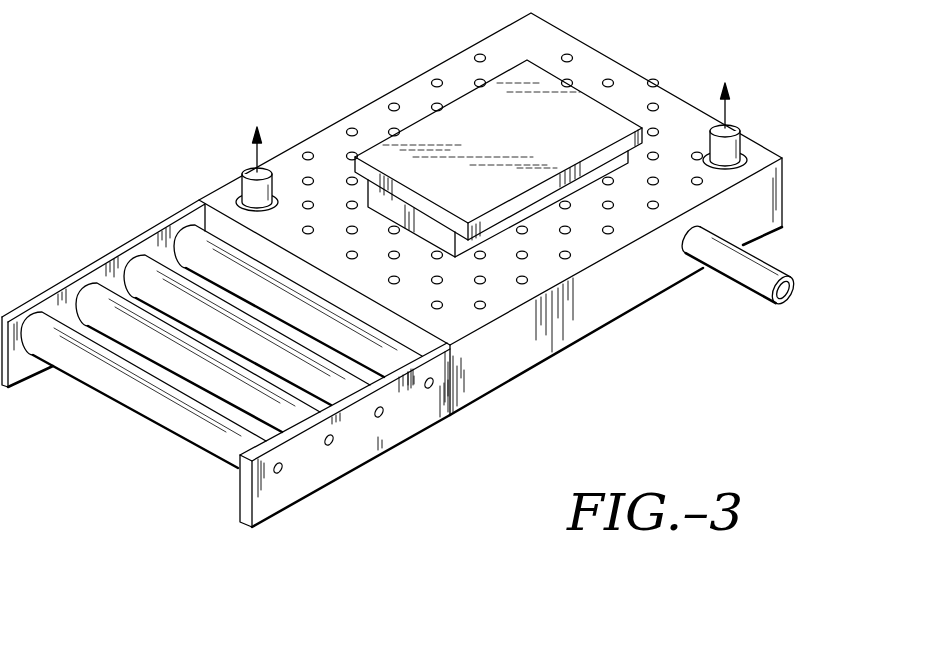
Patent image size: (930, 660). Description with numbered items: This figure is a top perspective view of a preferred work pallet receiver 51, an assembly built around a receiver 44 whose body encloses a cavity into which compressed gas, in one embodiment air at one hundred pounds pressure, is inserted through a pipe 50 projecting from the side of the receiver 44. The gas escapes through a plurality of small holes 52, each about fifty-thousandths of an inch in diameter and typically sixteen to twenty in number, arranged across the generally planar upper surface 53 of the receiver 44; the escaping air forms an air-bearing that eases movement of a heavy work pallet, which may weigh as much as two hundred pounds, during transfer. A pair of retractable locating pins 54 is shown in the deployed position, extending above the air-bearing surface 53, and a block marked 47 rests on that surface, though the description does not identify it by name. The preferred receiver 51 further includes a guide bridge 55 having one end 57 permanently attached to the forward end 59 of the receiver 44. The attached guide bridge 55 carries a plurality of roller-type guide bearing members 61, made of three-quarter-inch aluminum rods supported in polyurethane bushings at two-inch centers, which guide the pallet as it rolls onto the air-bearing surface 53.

The work pallet receiver 44 is at (586, 322).
The block 47 is at (489, 133).
The pipe 50 is at (838, 323).
The work pallet receiver 51 is at (201, 93).
The small holes 52 is at (610, 81).
The upper surface 53 is at (632, 228).
The retractable locating pins 54 is at (246, 177).
The guide bridge 55 is at (332, 463).
The end of guide bridge 57 is at (452, 382).
The forward end of receiver 59 is at (216, 220).
The roller-type guide bearing members 61 is at (145, 398).